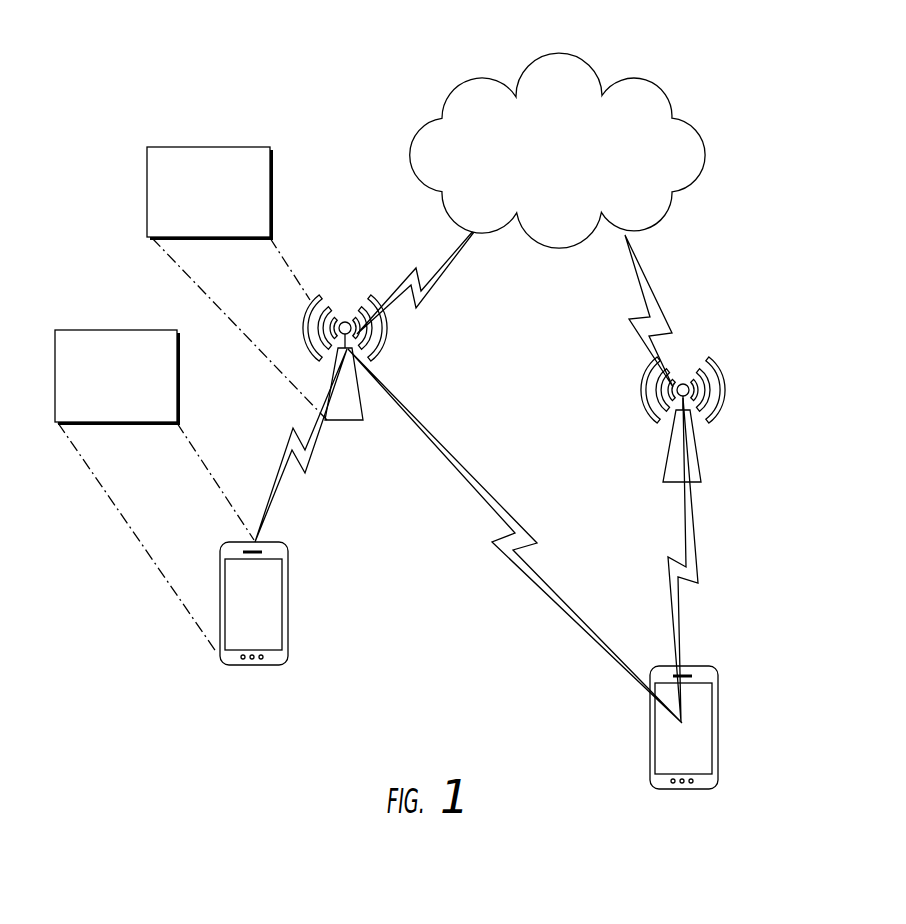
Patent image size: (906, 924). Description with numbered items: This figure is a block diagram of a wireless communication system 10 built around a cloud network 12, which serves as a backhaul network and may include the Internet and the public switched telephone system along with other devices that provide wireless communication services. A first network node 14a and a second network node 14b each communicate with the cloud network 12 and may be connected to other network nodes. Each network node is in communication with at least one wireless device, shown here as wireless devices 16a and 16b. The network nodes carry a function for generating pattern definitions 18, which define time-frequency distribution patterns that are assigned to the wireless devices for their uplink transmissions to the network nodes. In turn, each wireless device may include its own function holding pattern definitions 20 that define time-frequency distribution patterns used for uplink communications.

The wireless communication system 10 is at (606, 52).
The cloud network 12 is at (566, 165).
The first network node 14a is at (297, 336).
The second network node 14b is at (726, 380).
The wireless device 16a is at (289, 605).
The wireless device 16b is at (718, 728).
The pattern definitions 18 is at (230, 147).
The pattern definitions 20 is at (138, 330).